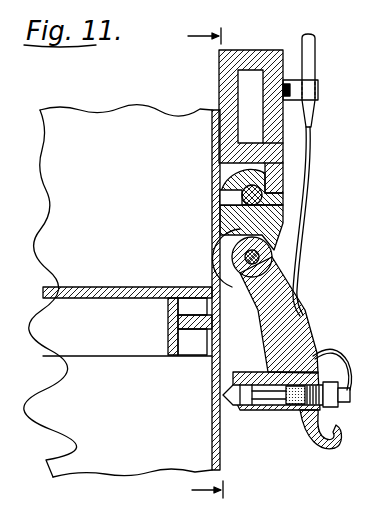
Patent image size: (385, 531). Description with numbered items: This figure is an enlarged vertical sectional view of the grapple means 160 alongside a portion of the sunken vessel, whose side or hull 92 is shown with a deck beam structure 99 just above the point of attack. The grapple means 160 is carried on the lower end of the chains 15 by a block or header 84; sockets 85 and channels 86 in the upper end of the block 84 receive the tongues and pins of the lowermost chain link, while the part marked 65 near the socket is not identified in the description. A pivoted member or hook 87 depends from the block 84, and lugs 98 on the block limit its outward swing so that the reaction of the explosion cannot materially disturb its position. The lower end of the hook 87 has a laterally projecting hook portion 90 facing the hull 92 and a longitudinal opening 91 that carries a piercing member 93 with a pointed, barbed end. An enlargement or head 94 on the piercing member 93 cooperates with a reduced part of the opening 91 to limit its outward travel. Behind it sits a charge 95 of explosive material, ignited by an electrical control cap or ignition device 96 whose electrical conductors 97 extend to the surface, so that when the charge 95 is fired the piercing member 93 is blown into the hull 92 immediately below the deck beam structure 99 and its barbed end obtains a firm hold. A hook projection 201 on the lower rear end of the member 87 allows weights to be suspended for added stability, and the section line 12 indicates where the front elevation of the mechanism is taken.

The section line 12 is at (190, 265).
The chains 15 is at (222, 82).
The slot 65 is at (240, 197).
The block or header 84 is at (223, 223).
The sockets 85 is at (262, 198).
The channels 86 is at (384, 206).
The pivoted members or hooks 87 is at (305, 336).
The hook portions 90 is at (277, 400).
The longitudinal opening 91 is at (270, 407).
The side or hull of the sunken vessel 92 is at (222, 457).
The piercing members 93 is at (243, 388).
The enlargement or head 94 is at (280, 394).
The charge of explosive material 95 is at (323, 368).
The electrical control cap or ignition device 96 is at (333, 394).
The electrical conductors 97 is at (303, 266).
The lugs 98 is at (283, 246).
The deck beam structure 99 is at (170, 337).
The grapple means 160 is at (302, 313).
The hook projections 201 is at (336, 444).